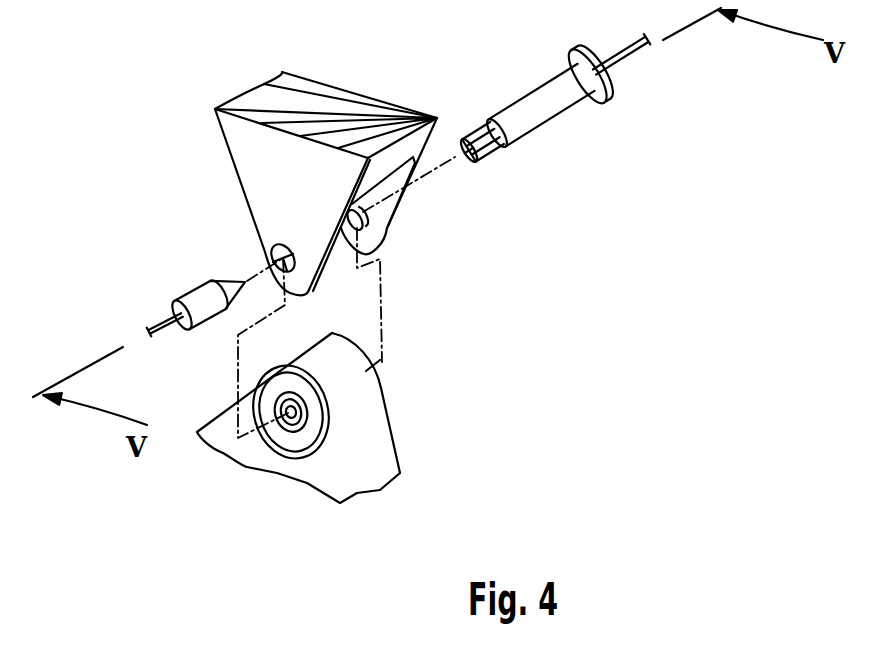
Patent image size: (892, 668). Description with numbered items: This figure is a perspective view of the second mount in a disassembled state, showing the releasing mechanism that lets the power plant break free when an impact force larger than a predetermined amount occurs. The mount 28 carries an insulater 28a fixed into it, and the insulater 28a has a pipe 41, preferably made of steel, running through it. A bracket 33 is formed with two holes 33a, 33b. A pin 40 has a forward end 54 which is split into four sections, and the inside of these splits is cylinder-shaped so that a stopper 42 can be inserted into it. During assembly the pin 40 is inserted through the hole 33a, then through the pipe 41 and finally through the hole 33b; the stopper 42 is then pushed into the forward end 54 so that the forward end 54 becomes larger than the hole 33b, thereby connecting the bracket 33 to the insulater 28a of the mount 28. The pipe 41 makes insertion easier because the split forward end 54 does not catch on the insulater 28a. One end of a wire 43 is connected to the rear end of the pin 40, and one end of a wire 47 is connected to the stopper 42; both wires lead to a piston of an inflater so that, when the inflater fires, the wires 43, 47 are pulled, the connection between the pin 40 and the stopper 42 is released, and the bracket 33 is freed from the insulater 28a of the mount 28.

The bracket 33 is at (358, 101).
The hole 33a is at (364, 221).
The hole 33b is at (270, 248).
The mount 28 is at (384, 391).
The insulater 28a is at (297, 442).
The pipe 41 is at (276, 424).
The stopper 42 is at (190, 290).
The wire 47 is at (153, 323).
The pin 40 is at (553, 118).
The wire 43 is at (647, 58).
The forward end 54 is at (473, 125).